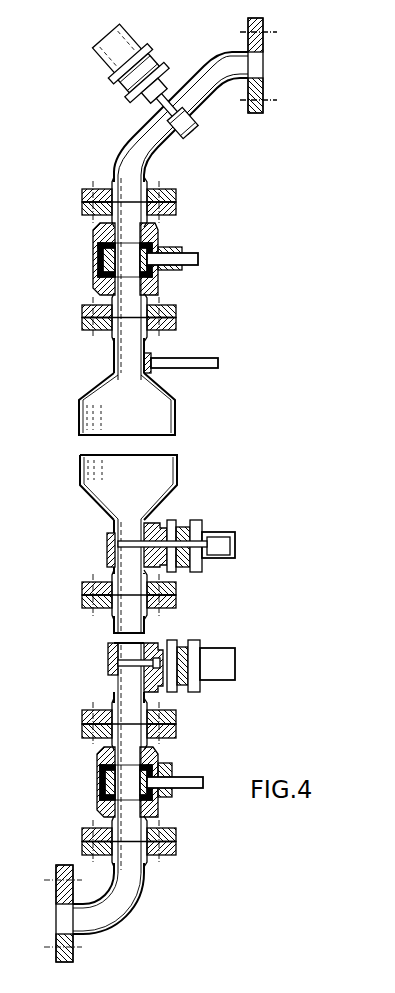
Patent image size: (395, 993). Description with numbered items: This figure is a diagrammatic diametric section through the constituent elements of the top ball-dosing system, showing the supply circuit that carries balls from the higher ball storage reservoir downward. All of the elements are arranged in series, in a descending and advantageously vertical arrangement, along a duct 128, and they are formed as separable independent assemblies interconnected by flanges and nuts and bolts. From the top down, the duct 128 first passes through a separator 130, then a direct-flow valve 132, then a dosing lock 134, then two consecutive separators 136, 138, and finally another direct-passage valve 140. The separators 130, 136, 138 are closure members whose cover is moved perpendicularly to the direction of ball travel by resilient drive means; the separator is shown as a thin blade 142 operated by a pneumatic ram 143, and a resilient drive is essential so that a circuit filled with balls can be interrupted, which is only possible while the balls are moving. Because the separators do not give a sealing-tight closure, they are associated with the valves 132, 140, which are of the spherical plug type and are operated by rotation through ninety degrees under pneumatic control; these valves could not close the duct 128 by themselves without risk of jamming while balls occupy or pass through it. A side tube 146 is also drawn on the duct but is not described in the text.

The duct 128 is at (252, 67).
The separator 130 is at (131, 46).
The direct-flow valve 132 is at (173, 236).
The dosing lock 134 is at (177, 411).
The separator 136 is at (203, 526).
The separator 138 is at (205, 643).
The direct-passage valve 140 is at (175, 759).
The thin blade 142 is at (162, 99).
The pneumatic ram 143 is at (100, 47).
The side tube 146 is at (184, 362).